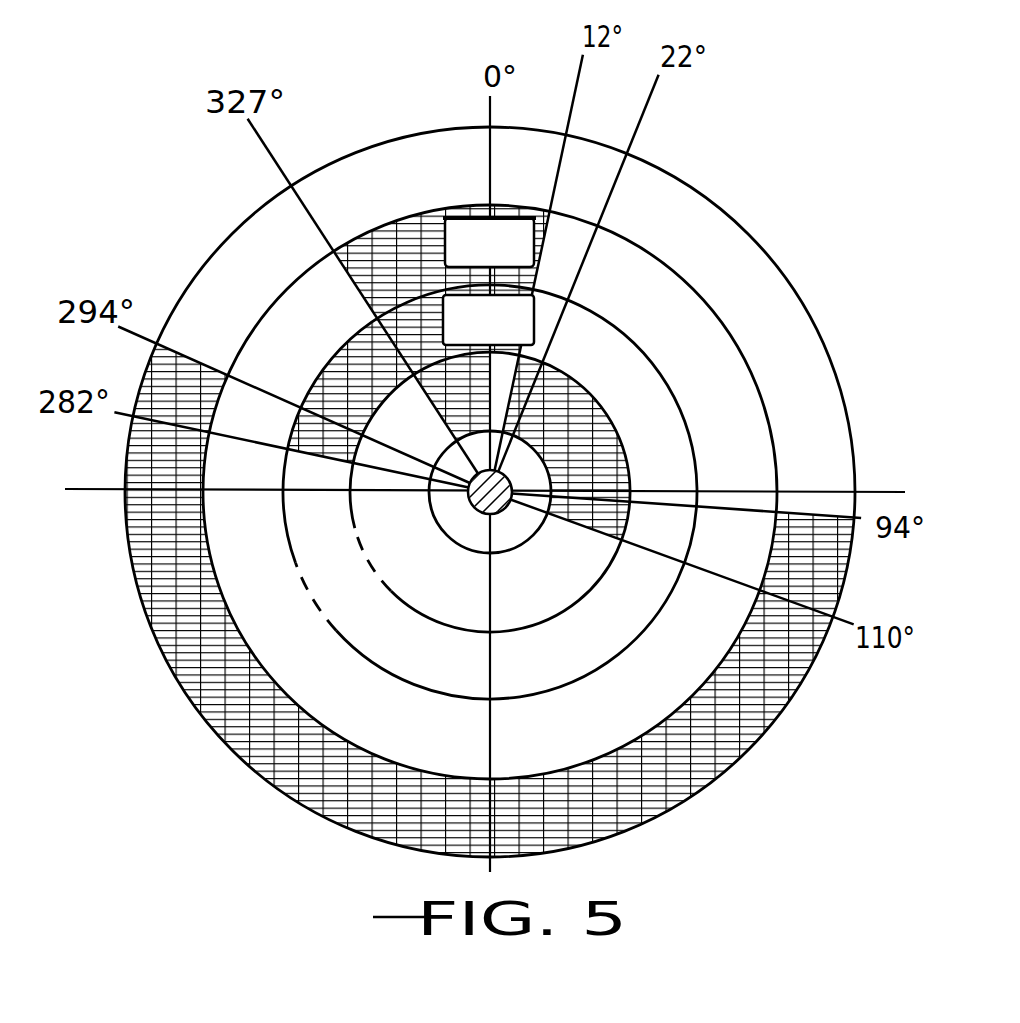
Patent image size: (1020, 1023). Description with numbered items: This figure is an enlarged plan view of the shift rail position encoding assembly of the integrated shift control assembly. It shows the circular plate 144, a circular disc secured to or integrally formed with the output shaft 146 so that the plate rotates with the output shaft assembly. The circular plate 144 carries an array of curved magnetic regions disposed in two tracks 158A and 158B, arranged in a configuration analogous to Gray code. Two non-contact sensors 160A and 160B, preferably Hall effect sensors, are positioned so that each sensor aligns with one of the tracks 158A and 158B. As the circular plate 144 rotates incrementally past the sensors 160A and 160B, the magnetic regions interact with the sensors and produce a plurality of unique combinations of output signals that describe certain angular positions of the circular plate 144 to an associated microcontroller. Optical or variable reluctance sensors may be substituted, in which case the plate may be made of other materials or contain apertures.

The circular plate 144 is at (808, 386).
The output shaft 146 is at (457, 513).
The track 158A is at (392, 237).
The track 158B is at (337, 370).
The non-contact sensor 160A is at (473, 233).
The non-contact sensor 160B is at (513, 320).